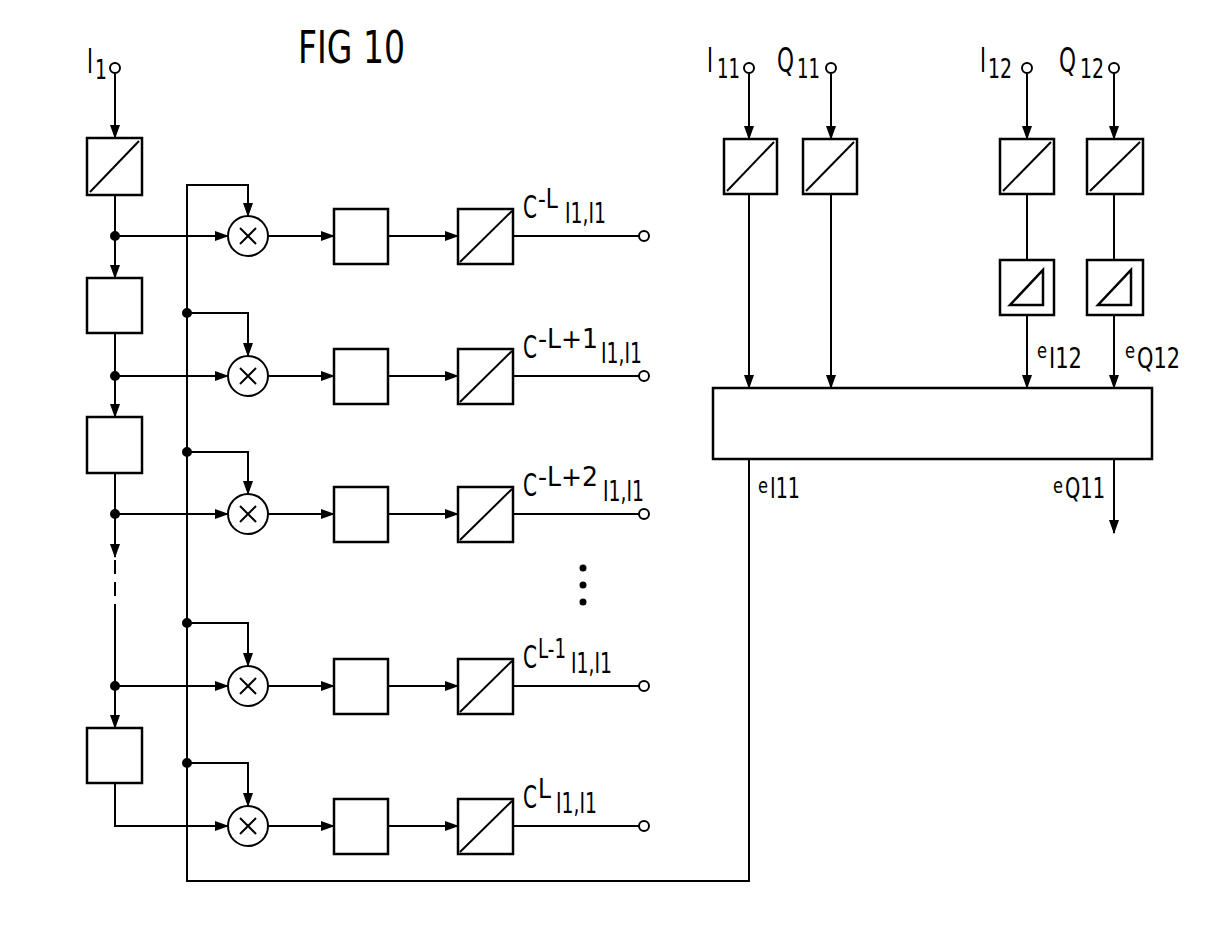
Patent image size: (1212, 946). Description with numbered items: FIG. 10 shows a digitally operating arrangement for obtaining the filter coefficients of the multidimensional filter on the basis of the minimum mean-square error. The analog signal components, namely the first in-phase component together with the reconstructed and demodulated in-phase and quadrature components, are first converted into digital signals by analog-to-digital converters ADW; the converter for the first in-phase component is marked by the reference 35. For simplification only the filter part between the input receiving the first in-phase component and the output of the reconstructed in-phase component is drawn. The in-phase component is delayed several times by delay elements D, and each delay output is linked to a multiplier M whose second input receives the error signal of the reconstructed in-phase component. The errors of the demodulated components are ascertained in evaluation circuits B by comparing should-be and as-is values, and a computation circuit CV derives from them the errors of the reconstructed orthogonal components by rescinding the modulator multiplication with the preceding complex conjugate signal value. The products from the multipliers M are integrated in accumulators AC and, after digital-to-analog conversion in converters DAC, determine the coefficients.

The analog-to-digital converter (ADW) 35 is at (142, 165).
The analog-to-digital converter ADW is at (933, 167).
The delay element D is at (102, 530).
The multiplier M is at (255, 517).
The accumulator AC is at (361, 512).
The digital-to-analog converter DAC is at (485, 514).
The evaluation circuit B is at (1062, 287).
The computation circuit CV is at (932, 423).